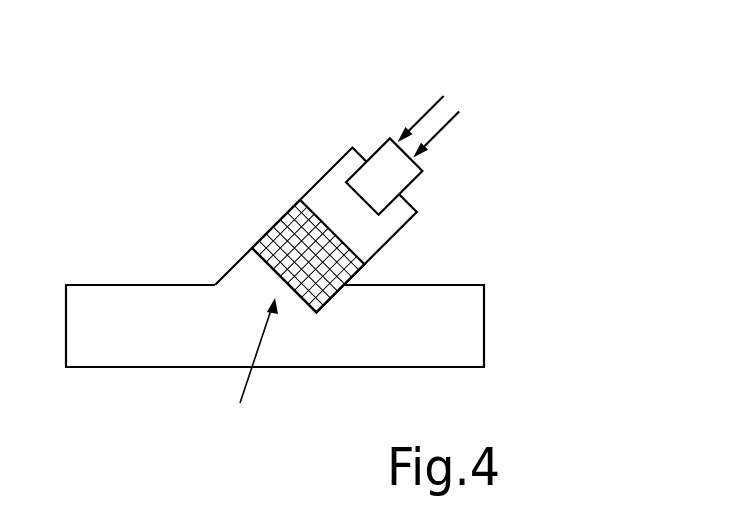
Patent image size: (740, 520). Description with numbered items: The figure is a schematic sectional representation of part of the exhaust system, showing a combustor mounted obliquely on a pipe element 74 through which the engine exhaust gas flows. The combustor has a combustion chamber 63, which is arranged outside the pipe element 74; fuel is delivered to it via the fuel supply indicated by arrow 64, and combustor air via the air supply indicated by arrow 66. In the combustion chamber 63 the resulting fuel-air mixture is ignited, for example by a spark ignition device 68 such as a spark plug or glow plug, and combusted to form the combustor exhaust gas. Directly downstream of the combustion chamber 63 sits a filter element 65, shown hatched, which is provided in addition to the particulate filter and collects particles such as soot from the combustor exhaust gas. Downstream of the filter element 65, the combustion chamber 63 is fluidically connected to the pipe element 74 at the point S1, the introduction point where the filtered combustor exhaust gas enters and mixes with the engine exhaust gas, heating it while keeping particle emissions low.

The combustion chamber 63 is at (380, 235).
The arrow illustrating fuel supply 64 is at (425, 117).
The filter element 65 is at (270, 227).
The arrow illustrating air supply 66 is at (440, 133).
The spark ignition device 68 is at (328, 202).
The pipe element 74 is at (127, 368).
The point S1 is at (249, 369).